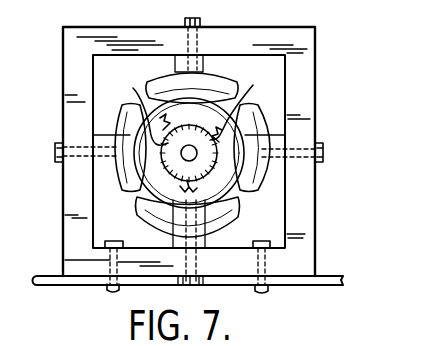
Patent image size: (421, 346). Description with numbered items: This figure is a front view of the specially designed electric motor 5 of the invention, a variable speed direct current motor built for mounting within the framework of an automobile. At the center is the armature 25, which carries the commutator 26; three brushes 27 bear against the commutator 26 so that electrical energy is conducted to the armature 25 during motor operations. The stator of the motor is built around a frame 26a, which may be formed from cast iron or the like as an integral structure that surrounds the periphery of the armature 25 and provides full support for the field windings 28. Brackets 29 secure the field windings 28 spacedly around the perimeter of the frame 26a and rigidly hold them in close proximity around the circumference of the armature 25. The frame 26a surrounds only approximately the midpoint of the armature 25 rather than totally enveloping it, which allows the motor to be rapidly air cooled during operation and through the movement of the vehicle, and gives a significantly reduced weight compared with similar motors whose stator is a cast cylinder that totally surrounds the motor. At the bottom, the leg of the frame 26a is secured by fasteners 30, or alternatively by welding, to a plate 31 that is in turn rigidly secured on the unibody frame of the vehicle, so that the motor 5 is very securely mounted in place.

The electric motor 5 is at (328, 107).
The armature 25 is at (135, 200).
The commutator 26 is at (232, 182).
The frame 26a is at (63, 216).
The brushes 27 is at (184, 191).
The field windings 28 is at (237, 77).
The brackets 29 is at (63, 179).
The fasteners 30 is at (115, 292).
The plate 31 is at (78, 286).